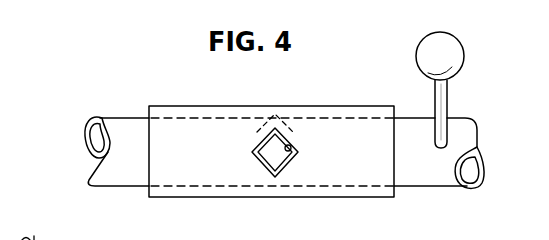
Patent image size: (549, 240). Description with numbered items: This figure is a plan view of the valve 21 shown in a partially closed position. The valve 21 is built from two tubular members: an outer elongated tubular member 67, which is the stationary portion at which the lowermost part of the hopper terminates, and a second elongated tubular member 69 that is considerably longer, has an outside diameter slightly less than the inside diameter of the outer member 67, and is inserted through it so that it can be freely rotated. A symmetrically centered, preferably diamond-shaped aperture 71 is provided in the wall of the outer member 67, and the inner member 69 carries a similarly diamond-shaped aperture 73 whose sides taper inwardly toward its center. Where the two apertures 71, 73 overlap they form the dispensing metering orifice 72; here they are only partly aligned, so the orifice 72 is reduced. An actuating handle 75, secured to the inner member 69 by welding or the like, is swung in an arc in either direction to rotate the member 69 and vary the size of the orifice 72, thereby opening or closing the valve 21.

The valve 21 is at (112, 68).
The elongated tubular member 67 is at (372, 128).
The second elongated tubular member 69 is at (122, 125).
The aperture 71 is at (288, 150).
The dispensing metering orifice 72 is at (273, 143).
The aperture 73 is at (270, 143).
The actuating handle 75 is at (452, 55).